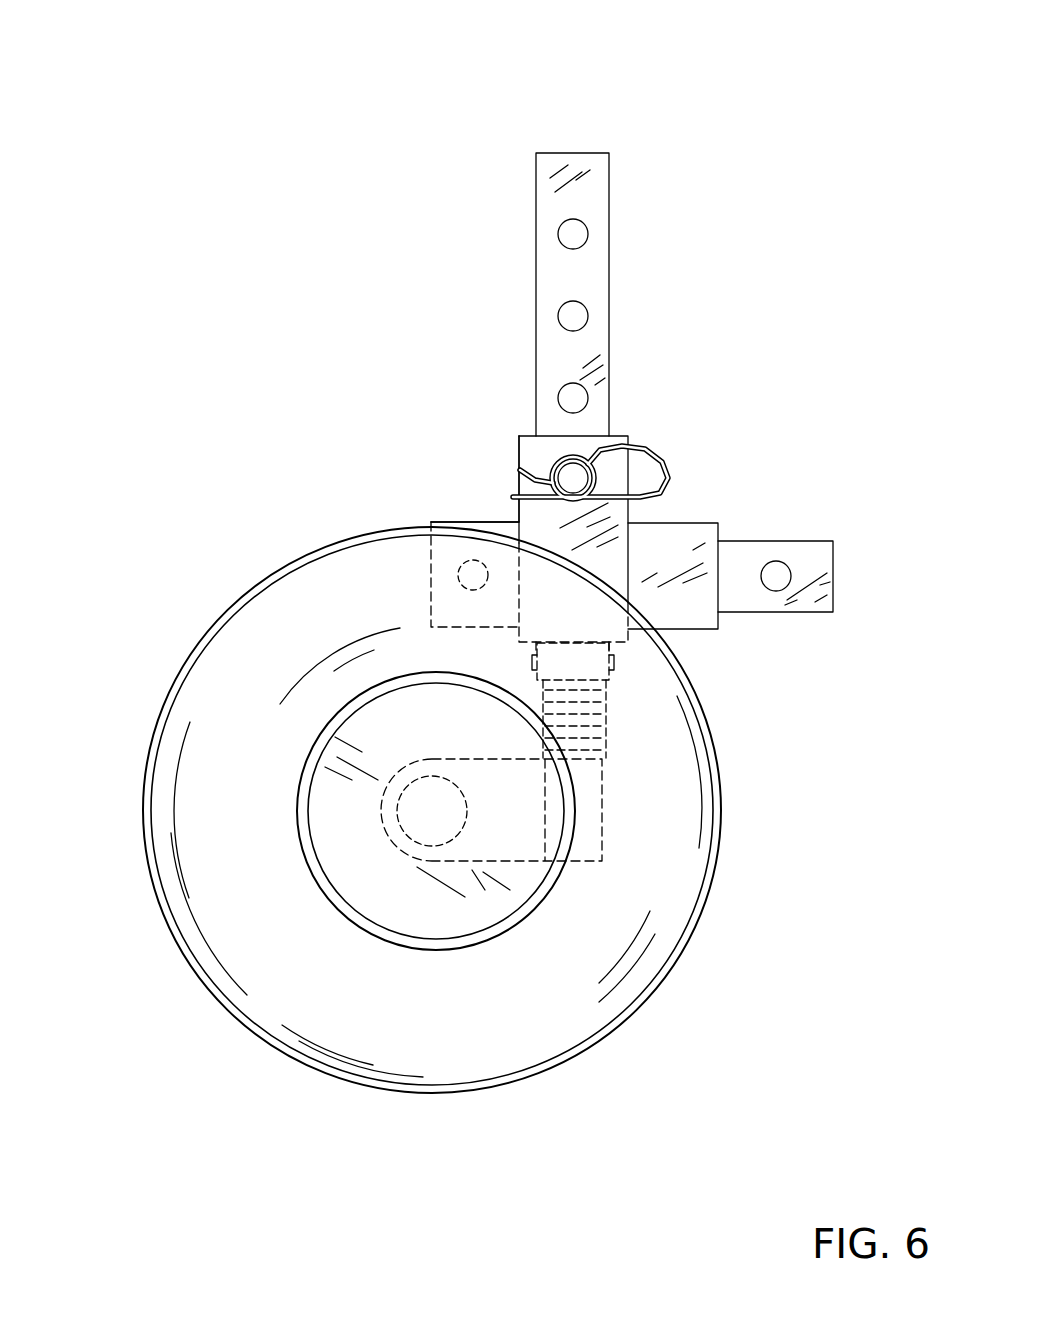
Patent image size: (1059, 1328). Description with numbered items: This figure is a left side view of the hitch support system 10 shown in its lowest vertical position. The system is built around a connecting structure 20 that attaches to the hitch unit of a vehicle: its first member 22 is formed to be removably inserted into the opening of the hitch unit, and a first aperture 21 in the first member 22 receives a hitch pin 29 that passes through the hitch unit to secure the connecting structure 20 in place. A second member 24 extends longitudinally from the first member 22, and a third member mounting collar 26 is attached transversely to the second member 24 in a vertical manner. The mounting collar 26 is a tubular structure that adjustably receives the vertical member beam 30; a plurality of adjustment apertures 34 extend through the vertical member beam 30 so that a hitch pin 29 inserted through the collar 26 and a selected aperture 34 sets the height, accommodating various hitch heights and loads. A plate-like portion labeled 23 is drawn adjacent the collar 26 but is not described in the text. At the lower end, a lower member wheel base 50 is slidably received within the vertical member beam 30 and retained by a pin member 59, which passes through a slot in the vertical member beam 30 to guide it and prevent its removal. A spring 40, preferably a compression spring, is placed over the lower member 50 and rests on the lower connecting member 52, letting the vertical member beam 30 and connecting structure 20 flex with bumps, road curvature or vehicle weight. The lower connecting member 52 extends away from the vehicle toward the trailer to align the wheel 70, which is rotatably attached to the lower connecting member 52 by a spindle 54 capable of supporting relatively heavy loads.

The hitch support system 10 is at (208, 132).
The connecting structure 20 is at (442, 523).
The first aperture 21 is at (777, 572).
The first member 22 is at (753, 605).
The bracket plate 23 is at (473, 575).
The second member 24 is at (687, 528).
The third member mounting collar 26 is at (618, 440).
The hitch pin 29 is at (573, 478).
The vertical member beam 30 is at (549, 161).
The adjustment apertures 34 is at (576, 236).
The spring 40 is at (592, 748).
The lower member wheel base 50 is at (603, 846).
The lower connecting member 52 is at (387, 811).
The spindle 54 is at (418, 825).
The pin member 59 is at (616, 663).
The wheel 70 is at (667, 926).